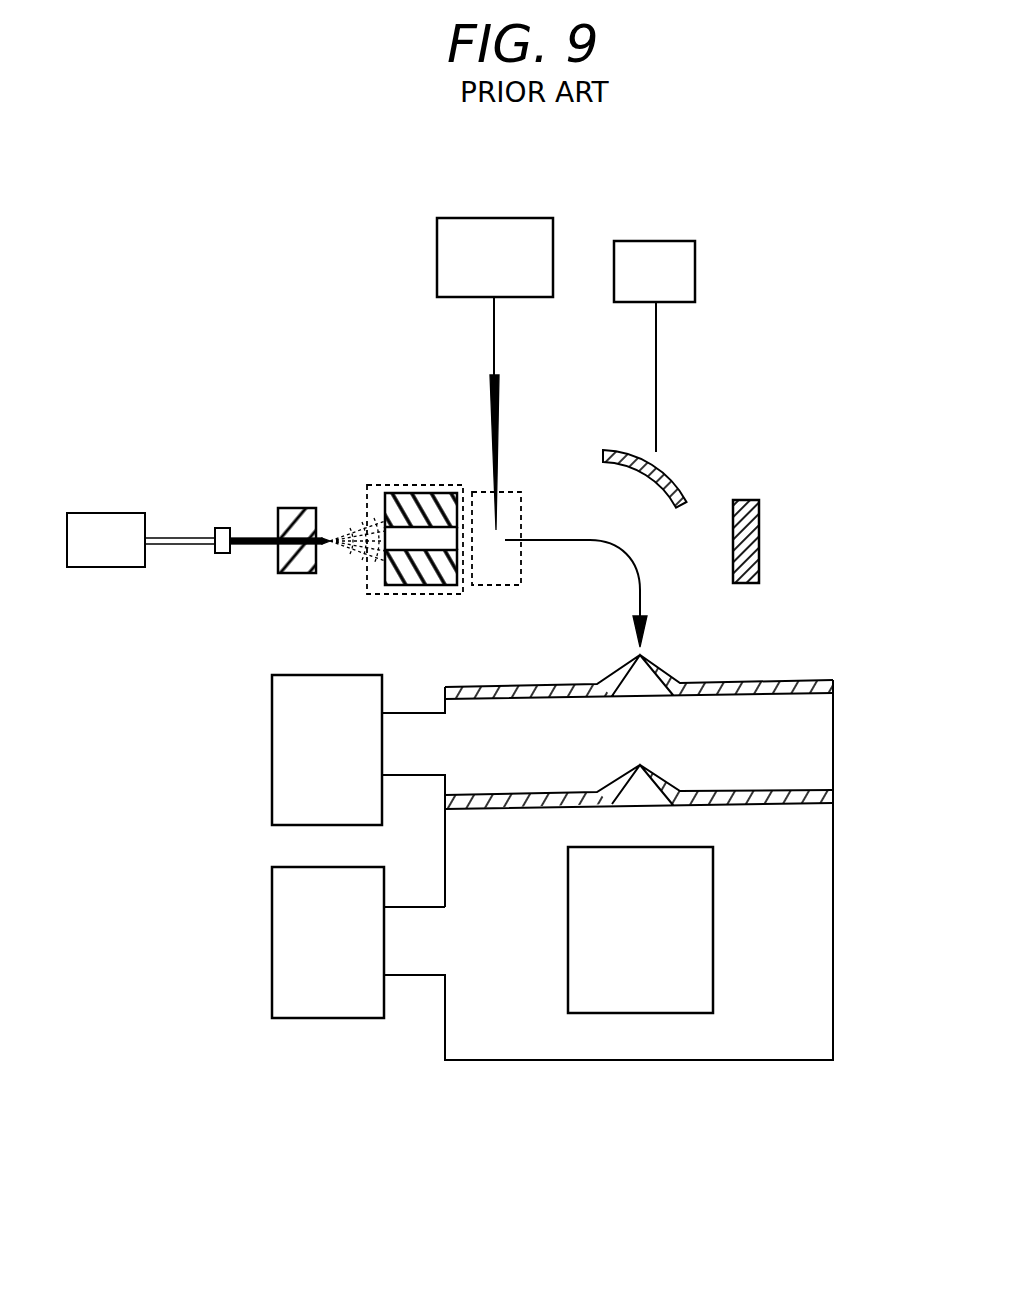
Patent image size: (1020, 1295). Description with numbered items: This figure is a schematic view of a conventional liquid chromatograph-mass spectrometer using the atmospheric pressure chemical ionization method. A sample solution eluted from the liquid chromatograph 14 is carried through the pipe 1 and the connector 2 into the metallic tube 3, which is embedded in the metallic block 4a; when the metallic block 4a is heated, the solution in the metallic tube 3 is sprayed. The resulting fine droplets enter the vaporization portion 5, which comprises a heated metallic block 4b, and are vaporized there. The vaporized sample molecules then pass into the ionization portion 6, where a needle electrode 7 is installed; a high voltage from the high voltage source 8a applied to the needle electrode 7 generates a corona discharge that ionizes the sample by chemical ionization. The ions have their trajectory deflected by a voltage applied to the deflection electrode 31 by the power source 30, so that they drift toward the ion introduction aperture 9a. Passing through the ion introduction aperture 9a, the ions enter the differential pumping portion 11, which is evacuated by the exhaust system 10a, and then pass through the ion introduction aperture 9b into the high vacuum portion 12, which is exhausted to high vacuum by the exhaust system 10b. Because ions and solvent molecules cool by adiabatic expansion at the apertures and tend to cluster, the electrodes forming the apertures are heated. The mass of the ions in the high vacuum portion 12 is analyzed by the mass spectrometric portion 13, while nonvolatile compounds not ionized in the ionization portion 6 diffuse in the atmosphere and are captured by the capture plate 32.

The liquid chromatograph 14 is at (89, 525).
The pipe 1 is at (174, 537).
The connector 2 is at (222, 527).
The metallic tube 3 is at (250, 547).
The metallic block 4a is at (298, 514).
The metallic block 4b is at (415, 580).
The vaporization portion 5 is at (378, 489).
The ionization portion 6 is at (512, 502).
The needle electrode 7 is at (492, 408).
The high voltage source 8a is at (530, 225).
The power source 30 is at (687, 277).
The deflection electrode 31 is at (680, 470).
The capture plate 32 is at (758, 542).
The ion introduction aperture 9a is at (643, 653).
The ion introduction aperture 9b is at (643, 764).
The exhaust system 10a is at (290, 802).
The exhaust system 10b is at (292, 994).
The differential pumping portion 11 is at (822, 778).
The high vacuum portion 12 is at (815, 948).
The mass spectrometric portion 13 is at (648, 1002).